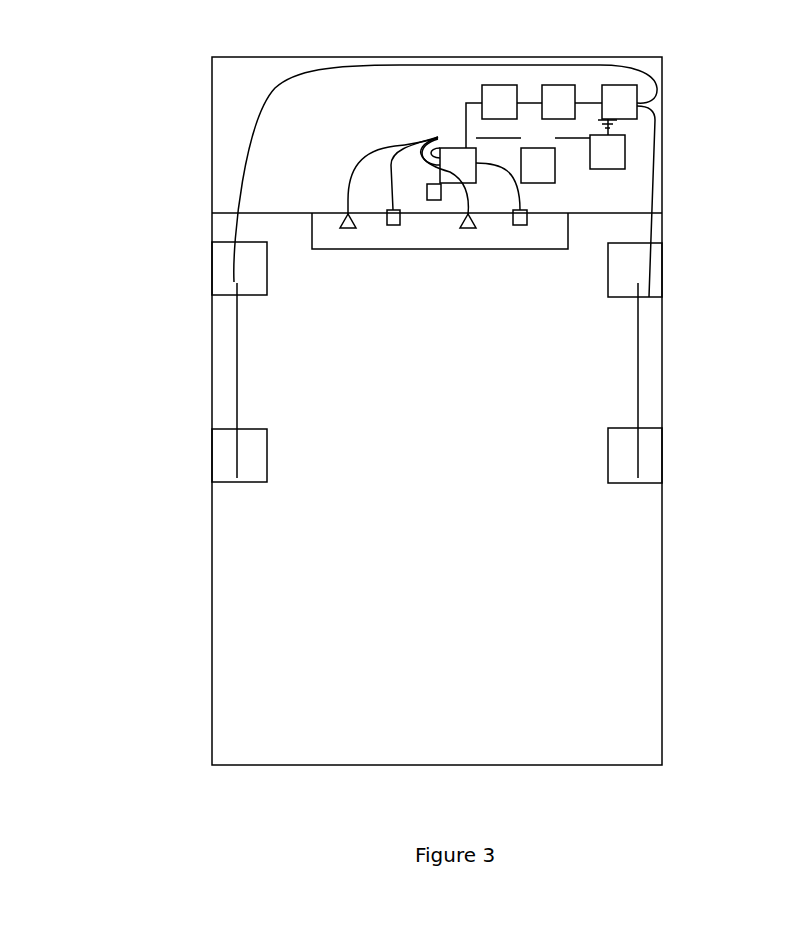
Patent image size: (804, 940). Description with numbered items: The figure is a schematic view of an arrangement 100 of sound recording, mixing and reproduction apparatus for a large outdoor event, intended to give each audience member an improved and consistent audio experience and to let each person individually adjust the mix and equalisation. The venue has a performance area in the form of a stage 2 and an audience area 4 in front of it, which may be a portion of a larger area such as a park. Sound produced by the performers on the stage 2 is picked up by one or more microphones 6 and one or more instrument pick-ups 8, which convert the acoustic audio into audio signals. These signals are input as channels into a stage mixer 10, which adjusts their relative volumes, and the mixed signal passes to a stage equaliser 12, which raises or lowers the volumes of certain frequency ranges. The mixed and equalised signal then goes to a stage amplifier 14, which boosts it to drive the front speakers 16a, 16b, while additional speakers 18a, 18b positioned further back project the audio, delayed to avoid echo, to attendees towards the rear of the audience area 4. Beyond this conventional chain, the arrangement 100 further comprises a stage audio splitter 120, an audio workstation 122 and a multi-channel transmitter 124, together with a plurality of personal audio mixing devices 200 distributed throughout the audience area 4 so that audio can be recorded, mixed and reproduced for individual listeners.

The arrangement 100 is at (112, 178).
The stage 2 is at (333, 212).
The audience area 4 is at (435, 395).
The microphone 6 is at (348, 228).
The instrument pick-up 8 is at (432, 190).
The stage mixer 10 is at (497, 110).
The stage equaliser 12 is at (563, 110).
The stage amplifier 14 is at (627, 110).
The front speaker 16a is at (254, 280).
The front speaker 16b is at (652, 280).
The additional speaker 18a is at (254, 465).
The additional speaker 18b is at (652, 465).
The stage audio splitter 120 is at (456, 153).
The audio workstation 122 is at (548, 146).
The multi-channel transmitter 124 is at (608, 152).
The personal audio mixing device 200 is at (344, 327).